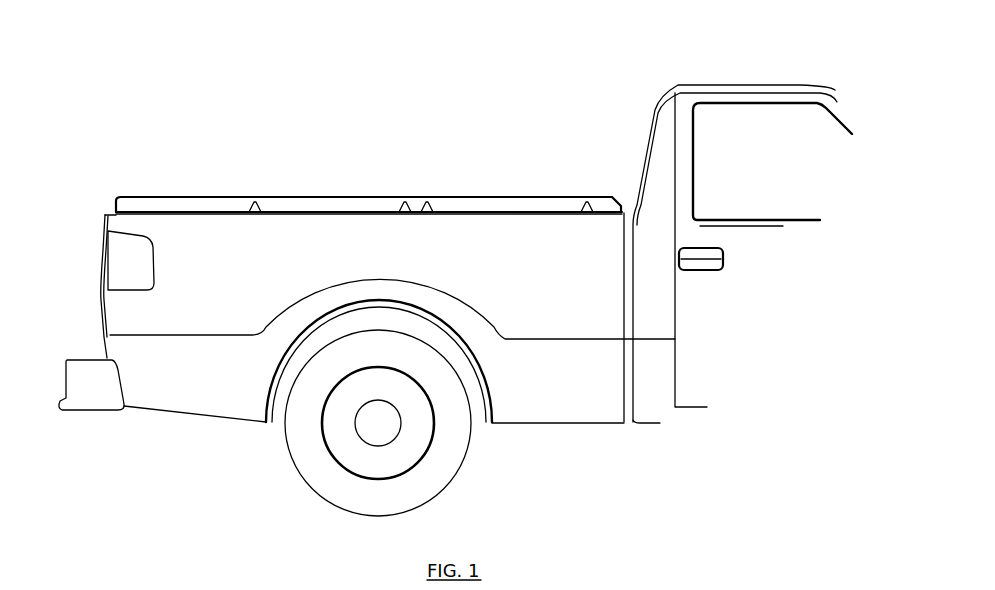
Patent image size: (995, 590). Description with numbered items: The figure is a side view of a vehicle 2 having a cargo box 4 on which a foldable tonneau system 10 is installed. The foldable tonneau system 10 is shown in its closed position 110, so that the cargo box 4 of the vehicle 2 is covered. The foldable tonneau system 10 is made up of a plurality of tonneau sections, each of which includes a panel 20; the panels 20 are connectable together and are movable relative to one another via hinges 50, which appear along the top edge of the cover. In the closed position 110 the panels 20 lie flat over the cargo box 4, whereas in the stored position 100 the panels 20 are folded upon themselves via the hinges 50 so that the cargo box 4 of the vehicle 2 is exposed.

The stored position 100 is at (437, 305).
The closed position 110 is at (613, 98).
The vehicle 2 is at (547, 94).
The cargo box 4 is at (132, 222).
The foldable tonneau system 10 is at (280, 122).
The panel 20 is at (170, 198).
The hinge 50 is at (408, 180).